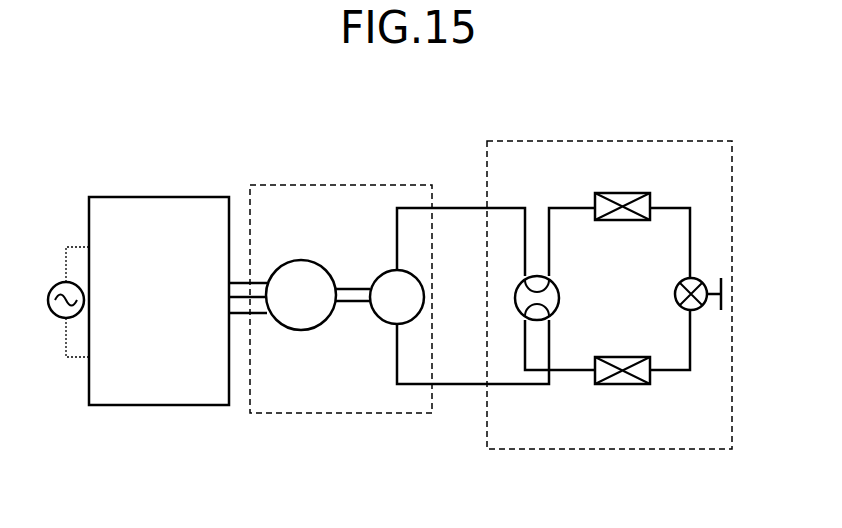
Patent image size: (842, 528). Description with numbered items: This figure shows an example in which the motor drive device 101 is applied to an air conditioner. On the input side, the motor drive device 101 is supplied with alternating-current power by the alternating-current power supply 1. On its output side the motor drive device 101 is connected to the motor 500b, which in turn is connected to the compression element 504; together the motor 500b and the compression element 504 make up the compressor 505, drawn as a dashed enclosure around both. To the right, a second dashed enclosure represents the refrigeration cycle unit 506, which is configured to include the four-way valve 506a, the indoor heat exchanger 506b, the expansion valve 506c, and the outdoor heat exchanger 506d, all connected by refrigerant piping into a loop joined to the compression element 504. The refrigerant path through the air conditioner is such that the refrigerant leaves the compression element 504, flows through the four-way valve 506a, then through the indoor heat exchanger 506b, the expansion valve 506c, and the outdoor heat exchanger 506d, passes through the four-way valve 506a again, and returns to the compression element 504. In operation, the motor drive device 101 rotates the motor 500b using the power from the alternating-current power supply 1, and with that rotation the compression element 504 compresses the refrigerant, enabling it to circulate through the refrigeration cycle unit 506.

The alternating-current power supply 1 is at (50, 288).
The motor drive device 101 is at (181, 197).
The compressor 505 is at (387, 185).
The motor 500b is at (303, 331).
The compression element 504 is at (388, 271).
The refrigeration cycle unit 506 is at (700, 141).
The four-way valve 506a is at (556, 294).
The indoor heat exchanger 506b is at (620, 193).
The expansion valve 506c is at (698, 281).
The outdoor heat exchanger 506d is at (625, 384).